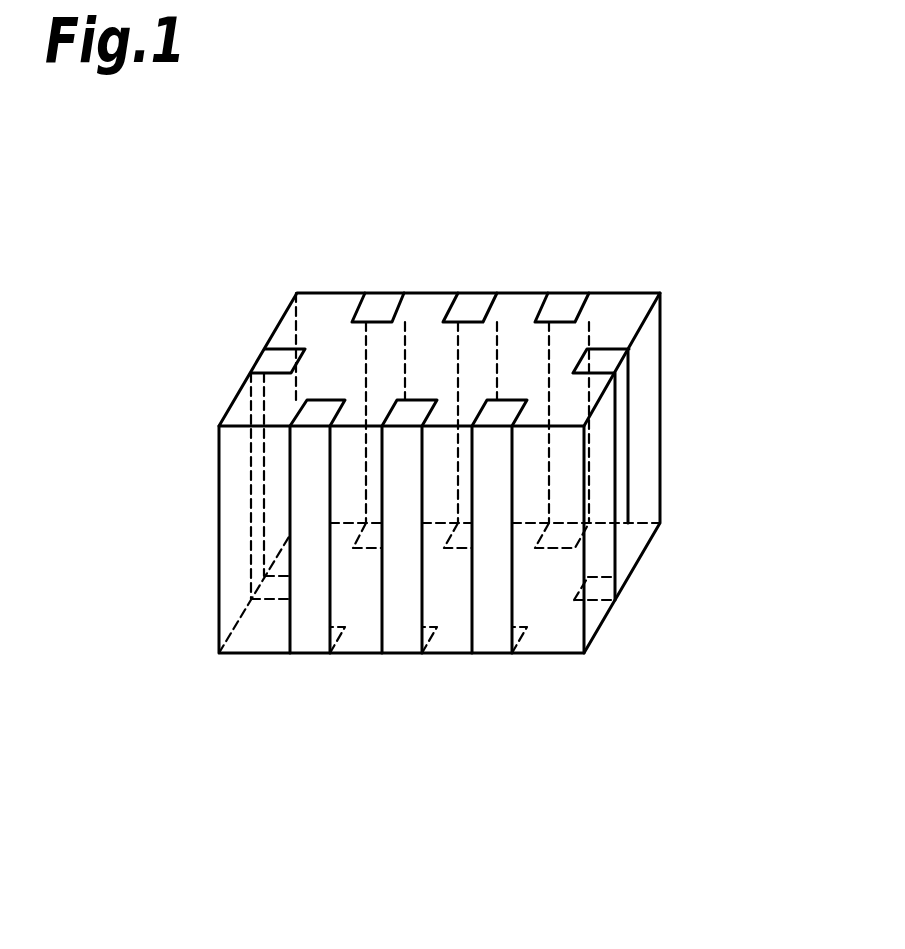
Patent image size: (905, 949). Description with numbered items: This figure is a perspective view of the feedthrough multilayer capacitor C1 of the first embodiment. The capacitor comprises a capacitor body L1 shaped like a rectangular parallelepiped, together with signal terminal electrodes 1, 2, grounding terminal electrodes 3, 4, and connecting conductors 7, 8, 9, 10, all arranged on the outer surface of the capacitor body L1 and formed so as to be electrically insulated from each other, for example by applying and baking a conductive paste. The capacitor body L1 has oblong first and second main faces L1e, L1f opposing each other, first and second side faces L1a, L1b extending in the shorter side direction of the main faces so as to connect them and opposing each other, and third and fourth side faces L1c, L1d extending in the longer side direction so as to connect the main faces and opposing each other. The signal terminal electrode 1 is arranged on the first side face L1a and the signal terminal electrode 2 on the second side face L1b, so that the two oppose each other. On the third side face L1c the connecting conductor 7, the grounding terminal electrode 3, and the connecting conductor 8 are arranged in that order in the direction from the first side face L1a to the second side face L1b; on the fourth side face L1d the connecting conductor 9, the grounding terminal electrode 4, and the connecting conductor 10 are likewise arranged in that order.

The feedthrough multilayer capacitor C1 is at (628, 152).
The capacitor body L1 is at (644, 296).
The first side face L1a is at (243, 519).
The second side face L1b is at (645, 475).
The third side face L1c is at (367, 593).
The fourth side face L1d is at (639, 412).
The first main face L1e is at (330, 307).
The second main face L1f is at (548, 615).
The signal terminal electrode 1 is at (280, 358).
The signal terminal electrode 2 is at (621, 531).
The grounding terminal electrode 3 is at (403, 632).
The grounding terminal electrode 4 is at (473, 300).
The connecting conductor 7 is at (312, 632).
The connecting conductor 8 is at (495, 632).
The connecting conductor 9 is at (381, 303).
The connecting conductor 10 is at (568, 300).